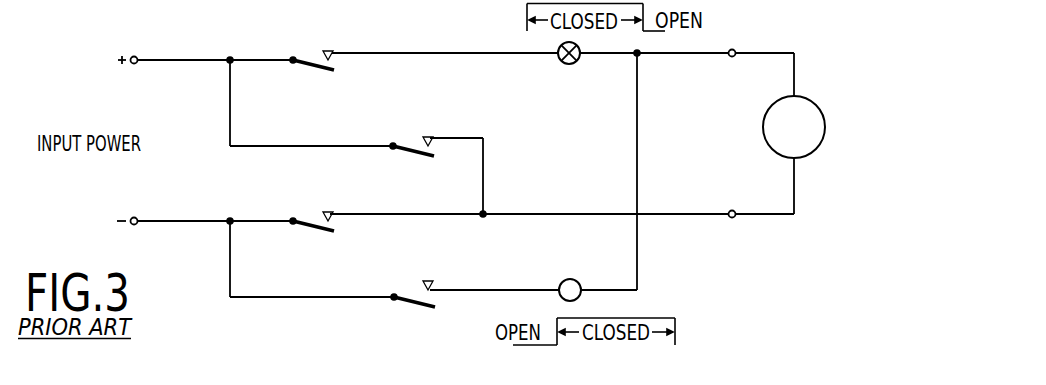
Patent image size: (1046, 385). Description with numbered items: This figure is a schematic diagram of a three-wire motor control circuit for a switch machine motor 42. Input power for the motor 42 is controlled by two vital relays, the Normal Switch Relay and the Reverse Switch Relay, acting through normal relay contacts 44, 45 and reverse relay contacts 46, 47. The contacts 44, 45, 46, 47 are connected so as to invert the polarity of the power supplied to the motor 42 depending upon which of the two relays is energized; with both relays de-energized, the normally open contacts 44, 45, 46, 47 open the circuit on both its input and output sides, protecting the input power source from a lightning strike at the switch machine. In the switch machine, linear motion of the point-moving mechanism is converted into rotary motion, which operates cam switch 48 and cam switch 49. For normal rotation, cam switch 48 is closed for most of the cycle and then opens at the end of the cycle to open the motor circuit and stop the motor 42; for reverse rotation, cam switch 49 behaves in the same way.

The switch machine motor 42 is at (812, 97).
The normal relay contact 44 is at (325, 50).
The normal relay contact 45 is at (325, 211).
The reverse relay contact 46 is at (426, 136).
The reverse relay contact 47 is at (426, 280).
The cam switch (CSw1) 48 is at (579, 60).
The cam switch (CSw2) 49 is at (580, 283).